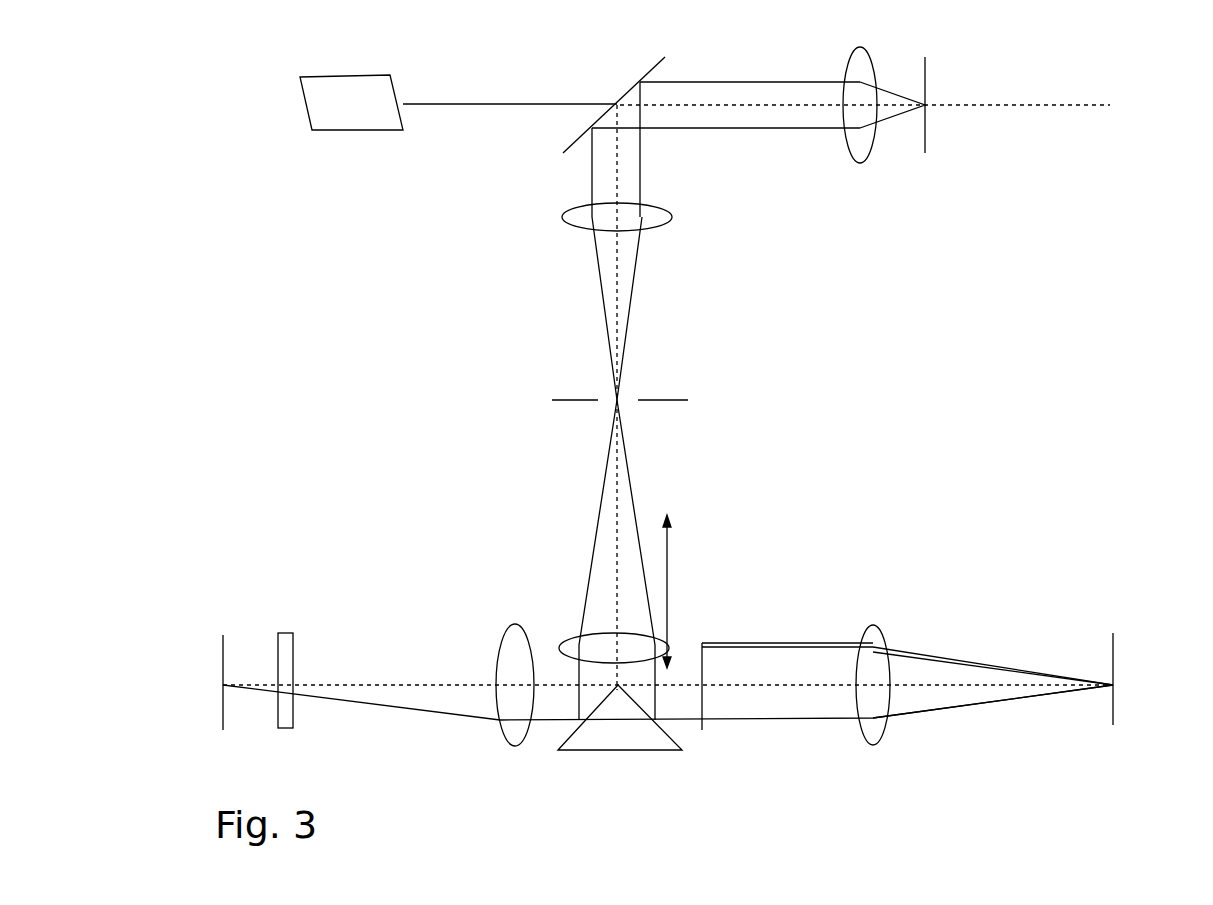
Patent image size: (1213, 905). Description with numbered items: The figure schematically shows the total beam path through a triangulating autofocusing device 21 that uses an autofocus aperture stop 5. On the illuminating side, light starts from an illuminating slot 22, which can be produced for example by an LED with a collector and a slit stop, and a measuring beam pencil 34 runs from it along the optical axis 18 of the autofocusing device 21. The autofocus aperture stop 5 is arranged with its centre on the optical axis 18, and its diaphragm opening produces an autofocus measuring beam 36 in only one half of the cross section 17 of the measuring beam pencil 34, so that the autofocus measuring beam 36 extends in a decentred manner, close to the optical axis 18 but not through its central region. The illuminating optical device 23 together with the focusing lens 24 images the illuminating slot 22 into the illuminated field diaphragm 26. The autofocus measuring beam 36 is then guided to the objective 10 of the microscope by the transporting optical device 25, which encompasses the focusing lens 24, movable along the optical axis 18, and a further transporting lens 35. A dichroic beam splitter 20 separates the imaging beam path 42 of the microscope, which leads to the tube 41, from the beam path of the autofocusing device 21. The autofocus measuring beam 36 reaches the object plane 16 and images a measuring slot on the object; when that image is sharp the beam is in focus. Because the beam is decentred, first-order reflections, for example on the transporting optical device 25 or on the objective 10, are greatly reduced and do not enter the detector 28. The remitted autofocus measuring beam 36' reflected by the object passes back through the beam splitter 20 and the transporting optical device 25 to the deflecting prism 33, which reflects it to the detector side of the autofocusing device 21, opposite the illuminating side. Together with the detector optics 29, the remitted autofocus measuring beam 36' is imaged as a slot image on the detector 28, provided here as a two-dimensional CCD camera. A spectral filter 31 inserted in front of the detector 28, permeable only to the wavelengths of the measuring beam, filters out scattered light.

The tube 41 is at (351, 75).
The imaging beam path 42 is at (492, 103).
The dichroic beam splitter 20 is at (573, 142).
The triangulating autofocusing device 21 is at (376, 206).
The autofocus measuring beam 36 is at (806, 451).
The remitted autofocus measuring beam 36' is at (574, 403).
The objective 10 is at (865, 157).
The object plane 16 is at (930, 68).
The transporting lens 35 is at (672, 215).
The illuminated field diaphragm 26 is at (677, 398).
The transporting optical device 25 is at (550, 249).
The focusing lens 24 is at (635, 628).
The deflecting prism 33 is at (620, 750).
The autofocus aperture stop 5 is at (703, 725).
The cross section 17 is at (810, 643).
The optical axis 18 is at (785, 685).
The illuminating optical device 23 is at (880, 630).
The illuminating slot 22 is at (1118, 655).
The measuring beam pencil 34 is at (950, 705).
The detector 28 is at (222, 660).
The spectral filter 31 is at (295, 650).
The detector optics 29 is at (515, 745).